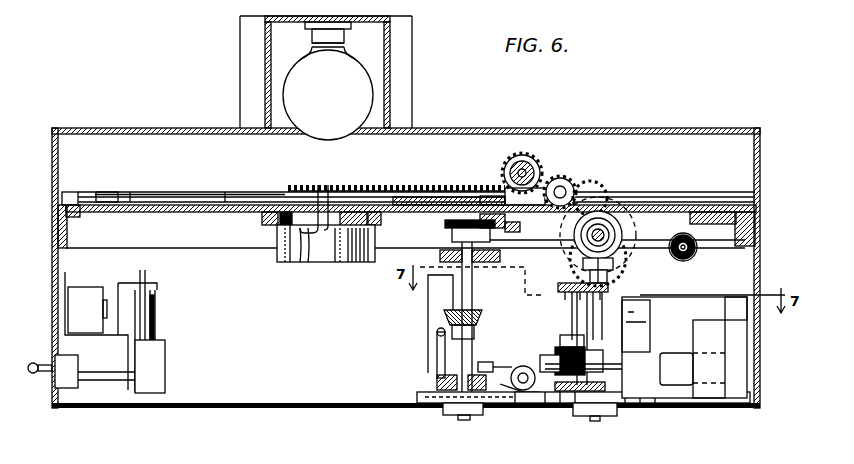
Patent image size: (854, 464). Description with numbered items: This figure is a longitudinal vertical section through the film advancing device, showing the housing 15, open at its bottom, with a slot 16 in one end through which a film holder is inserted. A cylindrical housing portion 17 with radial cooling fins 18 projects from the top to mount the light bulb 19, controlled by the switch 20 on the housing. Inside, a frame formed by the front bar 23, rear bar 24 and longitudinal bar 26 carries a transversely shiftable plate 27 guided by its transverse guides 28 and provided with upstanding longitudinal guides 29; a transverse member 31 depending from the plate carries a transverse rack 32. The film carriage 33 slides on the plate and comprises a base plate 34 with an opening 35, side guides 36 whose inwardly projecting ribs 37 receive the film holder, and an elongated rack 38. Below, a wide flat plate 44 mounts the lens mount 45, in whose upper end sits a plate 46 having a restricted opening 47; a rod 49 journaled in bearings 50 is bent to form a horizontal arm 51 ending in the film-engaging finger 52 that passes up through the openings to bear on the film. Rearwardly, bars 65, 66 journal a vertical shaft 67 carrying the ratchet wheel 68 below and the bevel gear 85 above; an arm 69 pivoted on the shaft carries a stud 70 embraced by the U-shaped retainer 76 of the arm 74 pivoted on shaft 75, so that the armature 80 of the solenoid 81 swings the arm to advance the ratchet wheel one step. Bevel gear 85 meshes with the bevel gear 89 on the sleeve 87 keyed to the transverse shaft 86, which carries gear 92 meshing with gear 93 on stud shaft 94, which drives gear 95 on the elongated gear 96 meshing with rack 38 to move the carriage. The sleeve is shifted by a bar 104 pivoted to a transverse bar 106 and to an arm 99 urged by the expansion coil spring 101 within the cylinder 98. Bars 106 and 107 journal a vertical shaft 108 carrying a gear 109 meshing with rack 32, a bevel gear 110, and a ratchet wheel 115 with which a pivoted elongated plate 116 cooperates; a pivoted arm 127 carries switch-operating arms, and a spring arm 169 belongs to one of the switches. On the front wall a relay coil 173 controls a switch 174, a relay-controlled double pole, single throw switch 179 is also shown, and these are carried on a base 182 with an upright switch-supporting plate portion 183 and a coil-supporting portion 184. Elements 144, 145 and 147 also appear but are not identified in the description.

The housing 15 is at (148, 128).
The slot 16 is at (52, 205).
The cylindrical housing portion 17 is at (395, 16).
The radial cooling fins 18 is at (252, 54).
The light bulb 19 is at (346, 122).
The switch 20 is at (68, 390).
The front bar 23 is at (68, 248).
The rear bar 24 is at (760, 258).
The longitudinal bar 26 is at (210, 248).
The plate 27 is at (176, 212).
The transverse guides 28 is at (80, 214).
The longitudinal guides 29 is at (70, 192).
The transverse member 31 is at (505, 224).
The transverse horizontal rack 32 is at (512, 234).
The film carriage 33 is at (176, 184).
The base plate 34 is at (104, 192).
The opening 35 is at (130, 192).
The guides 36 is at (226, 192).
The inwardly projecting ribs 37 is at (252, 192).
The elongated rack 38 is at (410, 188).
The wide flat plate 44 is at (262, 222).
The lens mount 45 is at (288, 262).
The plate 46 is at (358, 262).
The restricted opening 47 is at (336, 262).
The rod 49 is at (300, 262).
The bearings 50 is at (318, 185).
The horizontal arm 51 is at (308, 262).
The film-engaging finger 52 is at (330, 192).
The upper bar 65 is at (558, 287).
The lower bar 66 is at (606, 387).
The vertical shaft 67 is at (608, 290).
The ratchet wheel 68 is at (636, 403).
The elongated arm 69 is at (568, 406).
The vertical stud 70 is at (546, 358).
The elongated horizontal arm 74 is at (560, 347).
The shaft 75 is at (577, 306).
The U-shaped retainer 76 is at (500, 362).
The armature 80 is at (620, 364).
The solenoid 81 is at (710, 297).
The bevel gear 85 is at (620, 268).
The transverse shaft 86 is at (581, 236).
The sleeve 87 is at (622, 240).
The bevel gear 89 is at (622, 224).
The gear 92 is at (600, 196).
The gear 93 is at (564, 184).
The stud shaft 94 is at (586, 192).
The gear 95 is at (506, 164).
The elongated gear 96 is at (528, 166).
The cylinder 98 is at (681, 262).
The arm 99 is at (683, 235).
The expansion coil spring 101 is at (692, 254).
The longitudinally extending arm 104 is at (580, 264).
The transverse bar 106 is at (446, 252).
The transverse horizontal bar 107 is at (437, 374).
The vertical shaft 108 is at (472, 286).
The gear 109 is at (445, 224).
The bevel gear 110 is at (482, 312).
The ratchet wheel 115 is at (430, 406).
The elongated plate 116 is at (437, 382).
The pivoted arm 127 is at (693, 340).
The link 144 is at (512, 368).
The bracket 145 is at (428, 313).
The cam 147 is at (516, 376).
The spring 169 is at (650, 330).
The relay coil 173 is at (86, 296).
The switch 174 is at (160, 322).
The double pole, single throw switch 179 is at (566, 335).
The base 182 is at (108, 386).
The upright switch-supporting plate portion 183 is at (165, 370).
The coil-supporting portion 184 is at (65, 312).